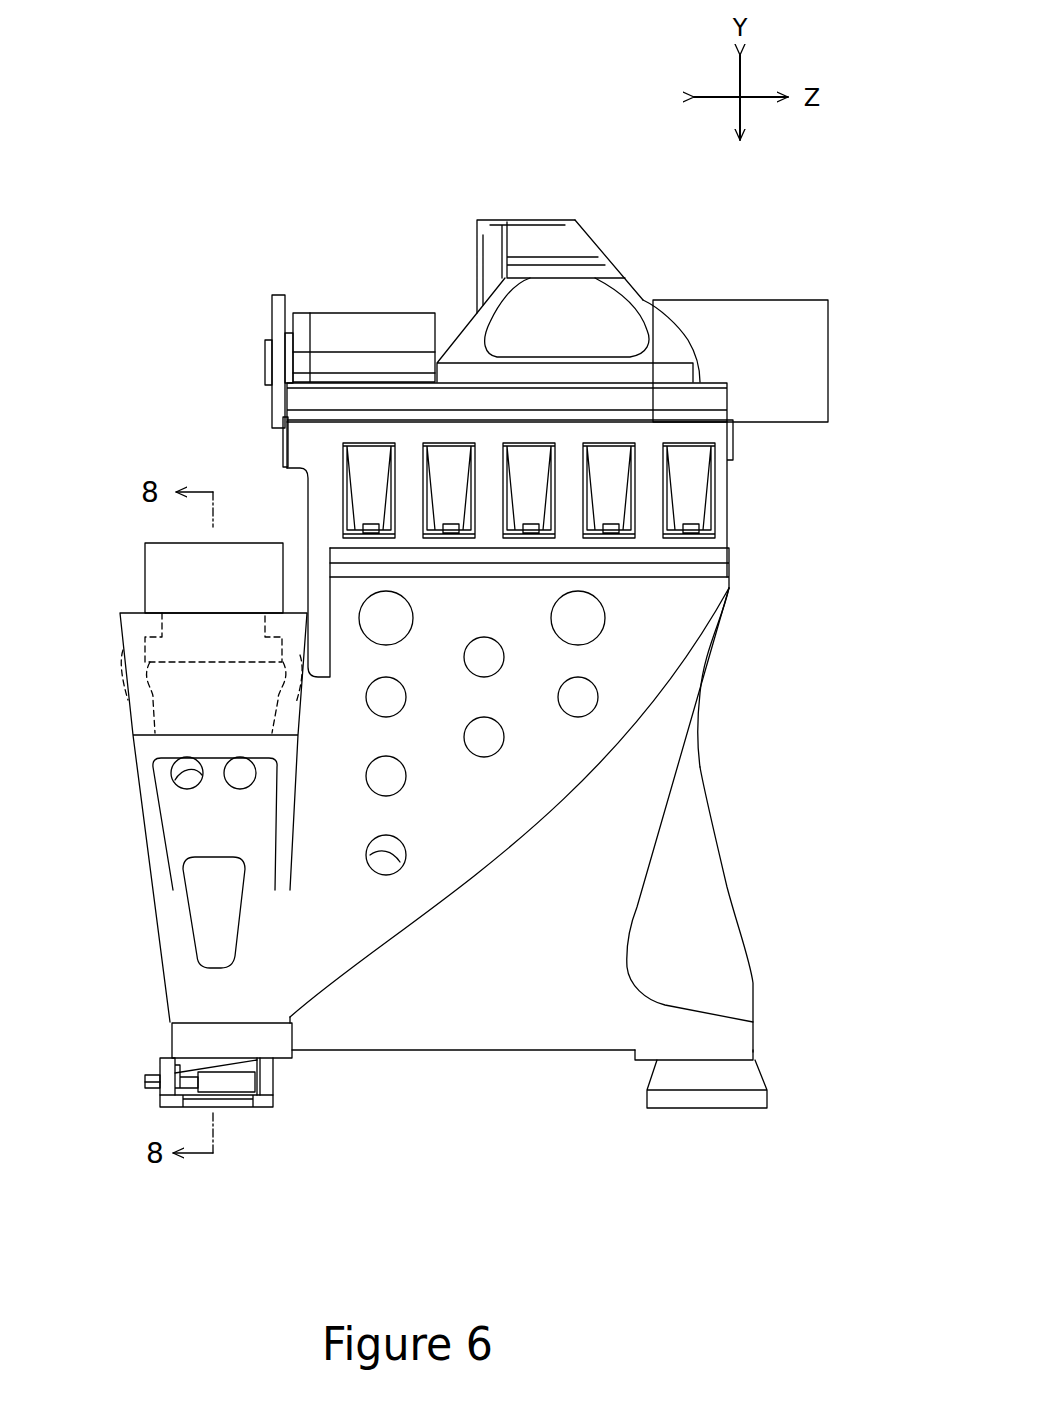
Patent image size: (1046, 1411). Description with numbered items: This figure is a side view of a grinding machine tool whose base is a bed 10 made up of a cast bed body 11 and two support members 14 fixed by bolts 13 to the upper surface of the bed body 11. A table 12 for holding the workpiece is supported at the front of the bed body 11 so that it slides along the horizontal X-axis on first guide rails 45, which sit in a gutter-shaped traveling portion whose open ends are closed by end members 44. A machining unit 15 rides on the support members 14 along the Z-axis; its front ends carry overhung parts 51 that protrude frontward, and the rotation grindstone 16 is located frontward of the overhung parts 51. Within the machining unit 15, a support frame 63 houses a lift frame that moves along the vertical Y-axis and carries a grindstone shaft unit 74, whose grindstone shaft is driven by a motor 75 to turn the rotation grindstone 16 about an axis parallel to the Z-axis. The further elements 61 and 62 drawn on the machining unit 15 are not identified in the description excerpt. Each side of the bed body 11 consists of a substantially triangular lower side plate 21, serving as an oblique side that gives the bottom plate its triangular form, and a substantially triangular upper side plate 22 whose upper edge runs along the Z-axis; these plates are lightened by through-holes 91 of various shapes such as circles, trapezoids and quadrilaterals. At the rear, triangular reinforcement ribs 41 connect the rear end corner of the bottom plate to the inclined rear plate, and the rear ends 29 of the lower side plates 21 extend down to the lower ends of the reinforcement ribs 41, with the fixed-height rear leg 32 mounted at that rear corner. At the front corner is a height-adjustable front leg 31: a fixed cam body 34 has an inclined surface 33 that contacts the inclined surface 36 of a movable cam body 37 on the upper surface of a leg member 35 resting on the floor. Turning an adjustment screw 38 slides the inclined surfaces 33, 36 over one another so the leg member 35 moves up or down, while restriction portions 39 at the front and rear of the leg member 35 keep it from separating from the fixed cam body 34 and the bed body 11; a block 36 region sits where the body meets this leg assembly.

The bed 10 is at (822, 584).
The bed body 11 is at (522, 1053).
The table 12 is at (233, 543).
The bolts 13 is at (453, 537).
The support members 14 is at (733, 505).
The machining unit 15 is at (385, 238).
The rotation grindstone 16 is at (282, 300).
The lower side plate 21 is at (658, 782).
The upper side plate 22 is at (670, 658).
The rear ends 29 is at (735, 1027).
The front leg 31 is at (232, 1107).
The rear leg 32 is at (707, 1108).
The inclined surface 33 is at (223, 1077).
The fixed cam body 34 is at (190, 1065).
The leg member 35 is at (267, 1107).
The inclined surface 36 is at (250, 1060).
The movable cam body 37 is at (237, 1083).
The adjustment screw 38 is at (153, 1086).
The restriction portions 39 is at (170, 1072).
The reinforcement ribs 41 is at (723, 920).
The end members 44 is at (137, 640).
The first guide rails 45 is at (125, 660).
The overhung parts 51 is at (293, 470).
The hood 61 is at (590, 230).
The opening 62 is at (627, 292).
The support frame 63 is at (497, 237).
The grindstone shaft unit 74 is at (350, 278).
The motor 75 is at (770, 318).
The through-holes 91 is at (373, 640).